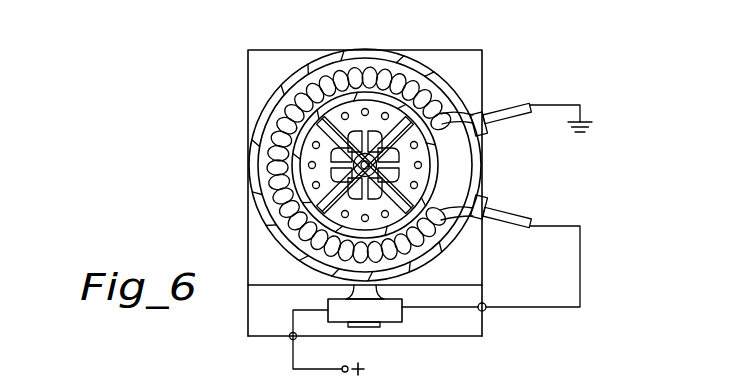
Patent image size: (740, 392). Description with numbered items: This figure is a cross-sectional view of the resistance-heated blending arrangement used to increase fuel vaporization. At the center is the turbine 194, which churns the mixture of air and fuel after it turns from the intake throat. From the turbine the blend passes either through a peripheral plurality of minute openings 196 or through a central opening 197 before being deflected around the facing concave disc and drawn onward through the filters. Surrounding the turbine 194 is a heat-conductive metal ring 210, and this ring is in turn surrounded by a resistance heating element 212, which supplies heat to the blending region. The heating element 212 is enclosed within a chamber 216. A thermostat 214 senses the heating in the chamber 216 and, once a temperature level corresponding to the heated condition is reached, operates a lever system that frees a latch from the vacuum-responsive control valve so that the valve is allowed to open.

The turbine 194 is at (310, 136).
The minute openings 196 is at (370, 113).
The central opening 197 is at (403, 177).
The heat-conductive metal ring 210 is at (438, 164).
The resistance heating element 212 is at (283, 222).
The thermostat 214 is at (389, 315).
The chamber 216 is at (460, 235).